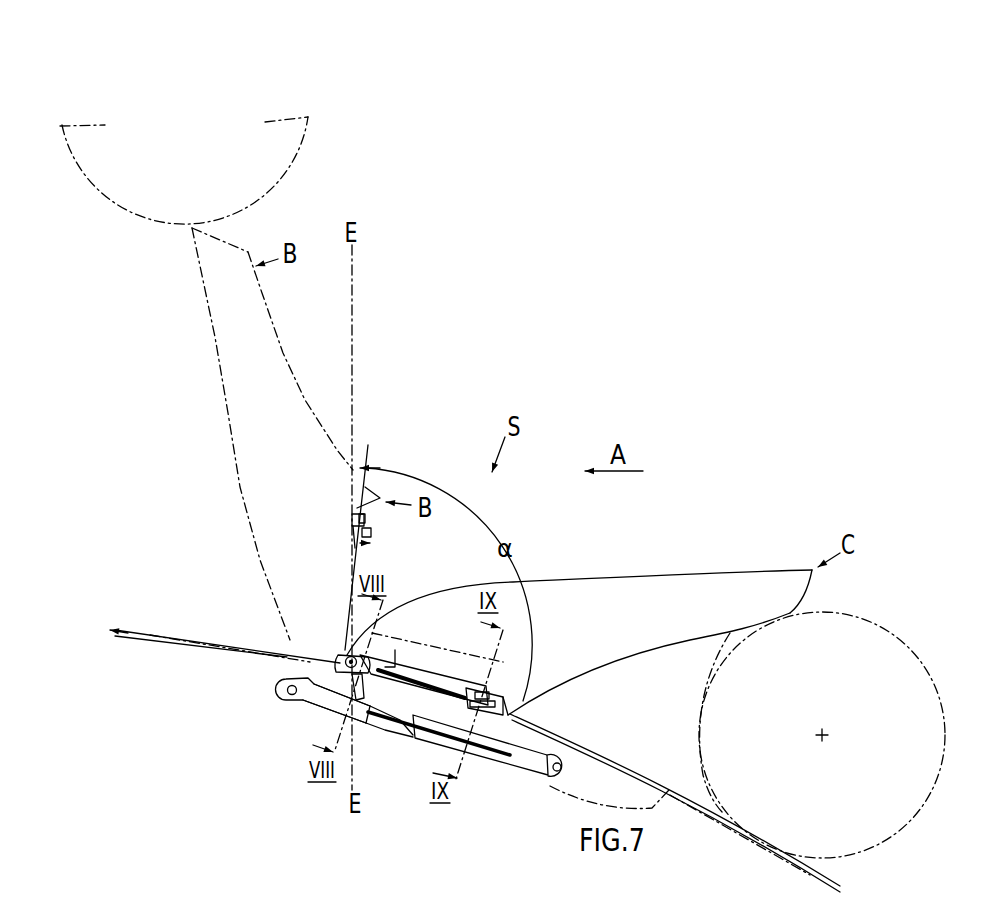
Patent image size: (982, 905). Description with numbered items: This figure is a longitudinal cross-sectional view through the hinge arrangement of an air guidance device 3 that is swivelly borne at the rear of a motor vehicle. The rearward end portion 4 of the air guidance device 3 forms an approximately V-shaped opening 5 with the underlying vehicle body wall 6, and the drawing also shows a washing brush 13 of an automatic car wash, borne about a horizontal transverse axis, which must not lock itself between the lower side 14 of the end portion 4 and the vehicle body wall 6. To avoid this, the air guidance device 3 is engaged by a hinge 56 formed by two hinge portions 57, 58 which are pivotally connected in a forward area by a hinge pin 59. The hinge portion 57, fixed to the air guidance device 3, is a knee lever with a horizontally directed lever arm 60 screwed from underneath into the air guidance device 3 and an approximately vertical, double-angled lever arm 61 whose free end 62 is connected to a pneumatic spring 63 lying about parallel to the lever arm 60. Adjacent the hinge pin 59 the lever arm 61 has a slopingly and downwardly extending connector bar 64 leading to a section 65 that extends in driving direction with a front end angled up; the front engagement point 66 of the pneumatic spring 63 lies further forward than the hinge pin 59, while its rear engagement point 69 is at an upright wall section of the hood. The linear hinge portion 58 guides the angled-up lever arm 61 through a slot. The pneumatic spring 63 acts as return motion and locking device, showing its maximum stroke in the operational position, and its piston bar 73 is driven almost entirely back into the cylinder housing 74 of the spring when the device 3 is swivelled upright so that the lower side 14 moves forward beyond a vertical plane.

The air guidance device 3 is at (600, 578).
The end portion 4 is at (772, 575).
The V-shaped opening 5 is at (649, 664).
The vehicle body wall 6 is at (647, 772).
The washing brush 13 is at (922, 657).
The lower side 14 is at (297, 372).
The hinge 56 is at (318, 663).
The hinge portion 57 is at (413, 660).
The hinge portion 58 is at (437, 705).
The hinge pin 59 is at (347, 655).
The lever arm 60 is at (442, 663).
The lever arm 61 is at (355, 676).
The free end 62 is at (280, 691).
The pneumatic spring 63 is at (402, 737).
The connector bar 64 is at (385, 667).
The section 65 is at (332, 688).
The front engagement point 66 is at (288, 700).
The rear engagement point 69 is at (553, 782).
The piston bar 73 is at (395, 733).
The hydraulic cylinder 74 is at (480, 743).